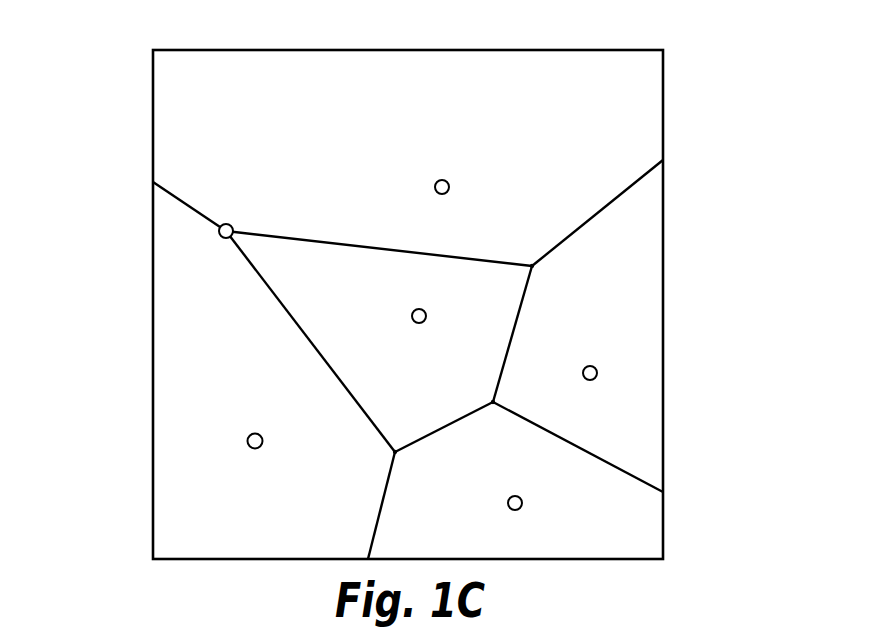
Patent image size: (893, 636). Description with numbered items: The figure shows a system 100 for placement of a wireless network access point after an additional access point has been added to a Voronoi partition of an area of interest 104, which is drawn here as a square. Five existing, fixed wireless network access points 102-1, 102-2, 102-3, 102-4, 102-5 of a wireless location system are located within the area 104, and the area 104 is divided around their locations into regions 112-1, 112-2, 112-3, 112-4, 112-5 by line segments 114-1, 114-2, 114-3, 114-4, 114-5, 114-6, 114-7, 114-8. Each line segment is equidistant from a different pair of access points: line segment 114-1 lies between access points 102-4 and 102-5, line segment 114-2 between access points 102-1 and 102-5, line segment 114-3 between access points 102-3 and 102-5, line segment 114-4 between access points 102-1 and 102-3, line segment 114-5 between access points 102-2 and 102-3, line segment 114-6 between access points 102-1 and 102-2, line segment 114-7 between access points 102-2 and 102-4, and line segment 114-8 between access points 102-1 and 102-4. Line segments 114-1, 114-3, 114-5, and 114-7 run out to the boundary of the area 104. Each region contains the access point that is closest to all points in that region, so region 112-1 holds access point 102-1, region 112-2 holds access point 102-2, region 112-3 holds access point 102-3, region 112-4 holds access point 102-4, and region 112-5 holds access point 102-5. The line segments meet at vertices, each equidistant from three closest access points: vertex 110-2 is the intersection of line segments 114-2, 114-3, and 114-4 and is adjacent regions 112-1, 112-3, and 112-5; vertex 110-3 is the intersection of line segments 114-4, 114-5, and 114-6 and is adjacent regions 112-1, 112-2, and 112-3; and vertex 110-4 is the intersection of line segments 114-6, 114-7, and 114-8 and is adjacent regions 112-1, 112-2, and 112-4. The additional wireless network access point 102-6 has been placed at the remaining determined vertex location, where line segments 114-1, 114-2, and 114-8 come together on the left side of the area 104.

The system 100 is at (633, 25).
The area of interest 104 is at (273, 50).
The wireless network access point 102-1 is at (418, 326).
The wireless network access point 102-2 is at (520, 510).
The wireless network access point 102-3 is at (590, 381).
The wireless network access point 102-4 is at (248, 436).
The wireless network access point 102-5 is at (449, 181).
The additional wireless network access point 102-6 is at (231, 224).
The vertex 110-2 is at (529, 267).
The vertex 110-3 is at (490, 400).
The vertex 110-4 is at (393, 452).
The region 112-1 is at (364, 293).
The region 112-2 is at (468, 533).
The region 112-3 is at (638, 288).
The region 112-4 is at (274, 533).
The region 112-5 is at (302, 113).
The line segment 114-1 is at (188, 207).
The line segment 114-2 is at (400, 246).
The line segment 114-3 is at (617, 197).
The line segment 114-4 is at (513, 340).
The line segment 114-5 is at (620, 467).
The line segment 114-6 is at (443, 428).
The line segment 114-7 is at (380, 505).
The line segment 114-8 is at (302, 332).